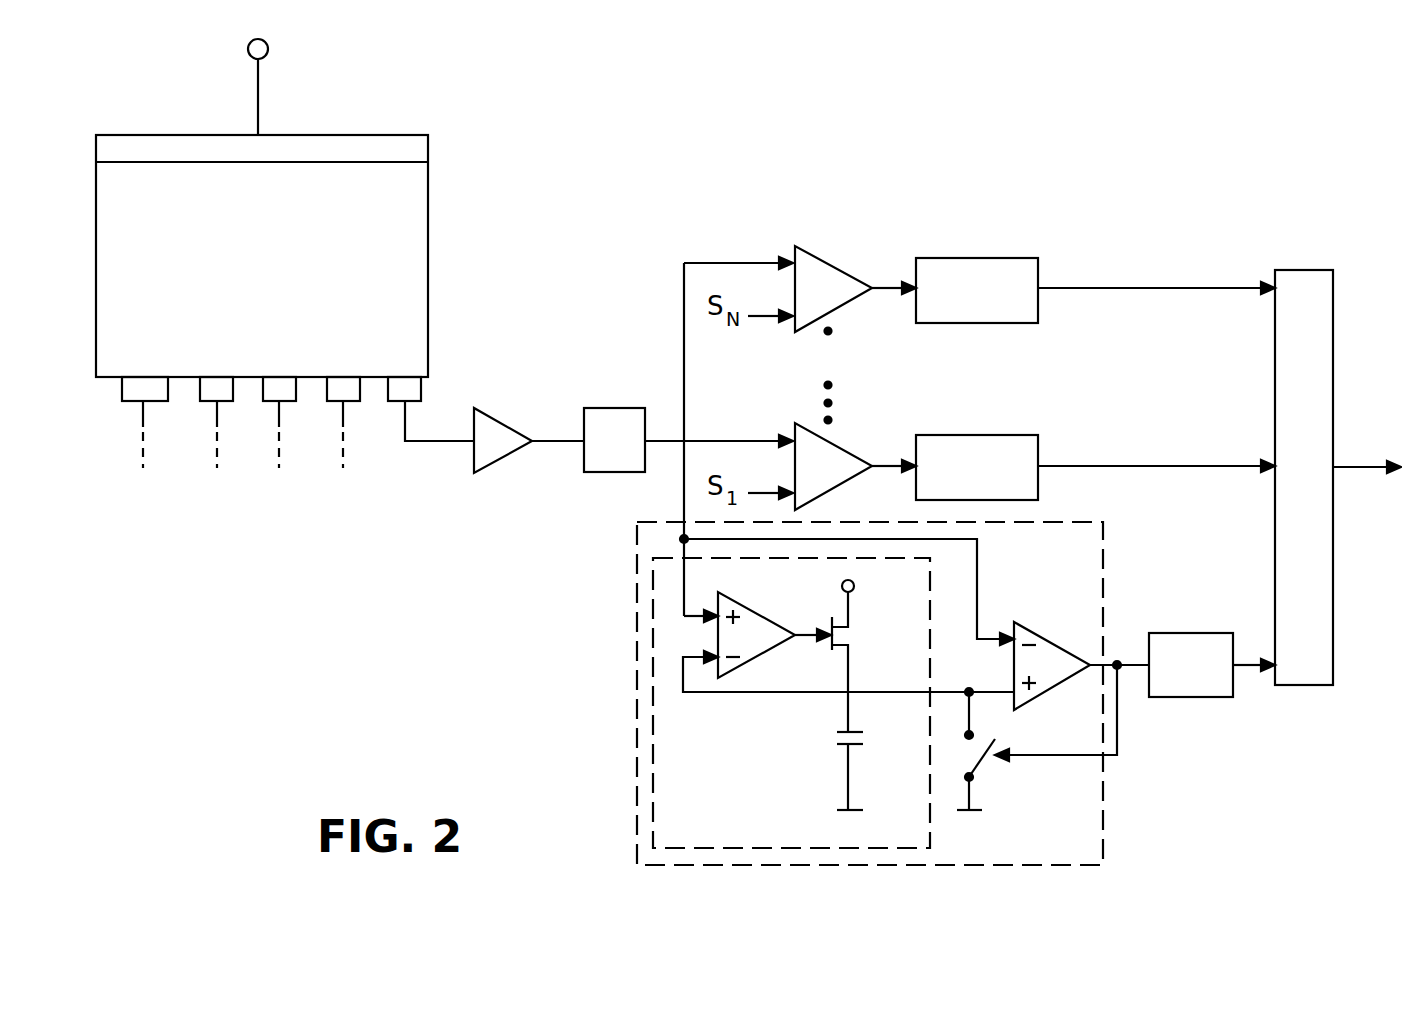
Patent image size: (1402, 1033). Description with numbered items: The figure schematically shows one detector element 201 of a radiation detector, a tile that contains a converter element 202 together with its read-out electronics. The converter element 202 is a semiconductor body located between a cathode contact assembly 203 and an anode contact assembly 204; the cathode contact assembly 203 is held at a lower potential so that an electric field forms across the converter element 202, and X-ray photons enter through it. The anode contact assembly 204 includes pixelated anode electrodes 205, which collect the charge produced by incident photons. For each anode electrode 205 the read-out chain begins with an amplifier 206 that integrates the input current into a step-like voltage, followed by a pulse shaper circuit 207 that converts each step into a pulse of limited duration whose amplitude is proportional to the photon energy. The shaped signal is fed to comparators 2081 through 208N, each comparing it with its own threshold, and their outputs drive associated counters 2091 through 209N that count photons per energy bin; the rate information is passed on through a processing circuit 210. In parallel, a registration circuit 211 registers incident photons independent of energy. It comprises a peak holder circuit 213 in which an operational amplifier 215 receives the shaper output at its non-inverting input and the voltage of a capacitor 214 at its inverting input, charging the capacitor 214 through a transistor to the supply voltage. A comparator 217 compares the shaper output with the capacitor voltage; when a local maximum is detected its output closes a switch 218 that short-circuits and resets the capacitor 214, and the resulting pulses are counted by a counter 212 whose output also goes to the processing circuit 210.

The detector element 201 is at (965, 160).
The converter element 202 is at (262, 208).
The cathode contact assembly 203 is at (318, 152).
The anode contact assembly 204 is at (185, 452).
The anode electrode 205 is at (132, 390).
The amplifier 206 is at (500, 430).
The pulse shaper circuit 207 is at (608, 408).
The comparator 208N is at (833, 273).
The comparator 2081 is at (842, 463).
The counter 209N is at (1095, 290).
The counter 2091 is at (1095, 467).
The processing circuit 210 is at (1300, 282).
The registration circuit 211 is at (635, 690).
The counter 212 is at (1212, 665).
The peak holder circuit 213 is at (653, 595).
The capacitor 214 is at (832, 740).
The operational amplifier 215 is at (748, 607).
The comparator 217 is at (1050, 637).
The switch 218 is at (982, 760).